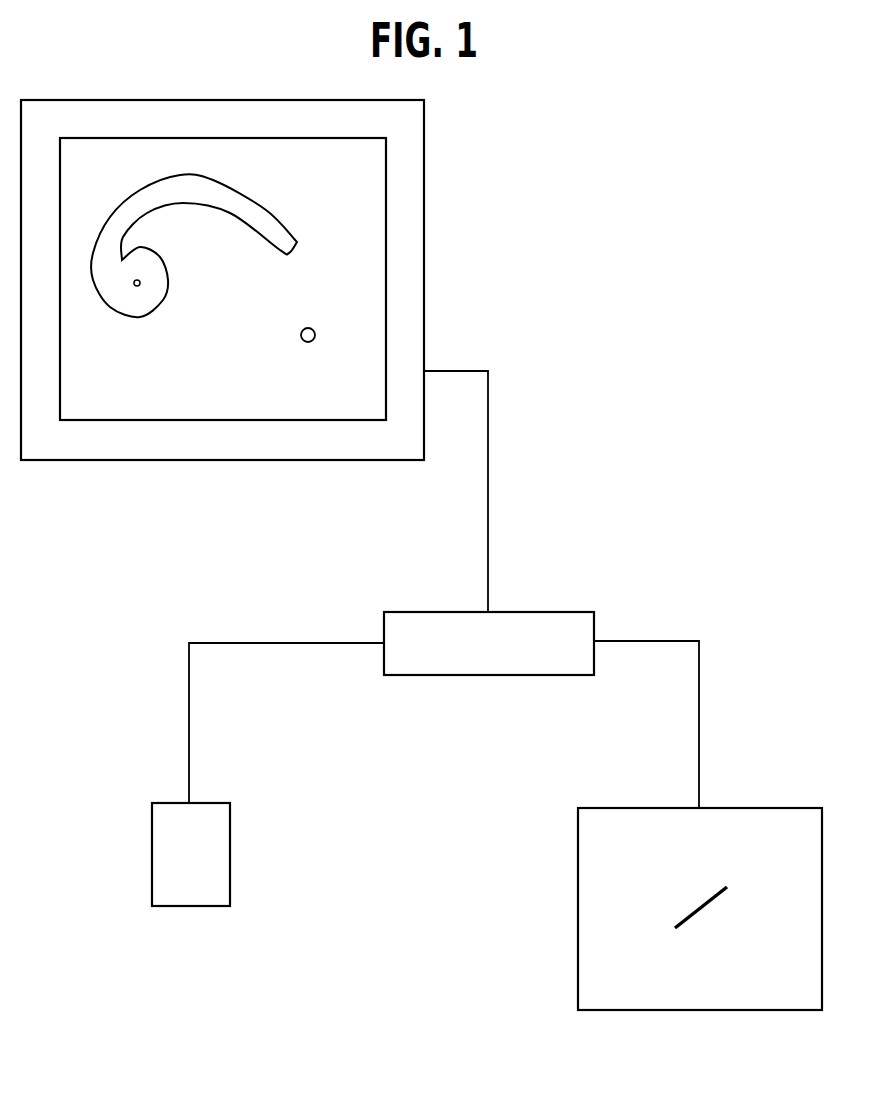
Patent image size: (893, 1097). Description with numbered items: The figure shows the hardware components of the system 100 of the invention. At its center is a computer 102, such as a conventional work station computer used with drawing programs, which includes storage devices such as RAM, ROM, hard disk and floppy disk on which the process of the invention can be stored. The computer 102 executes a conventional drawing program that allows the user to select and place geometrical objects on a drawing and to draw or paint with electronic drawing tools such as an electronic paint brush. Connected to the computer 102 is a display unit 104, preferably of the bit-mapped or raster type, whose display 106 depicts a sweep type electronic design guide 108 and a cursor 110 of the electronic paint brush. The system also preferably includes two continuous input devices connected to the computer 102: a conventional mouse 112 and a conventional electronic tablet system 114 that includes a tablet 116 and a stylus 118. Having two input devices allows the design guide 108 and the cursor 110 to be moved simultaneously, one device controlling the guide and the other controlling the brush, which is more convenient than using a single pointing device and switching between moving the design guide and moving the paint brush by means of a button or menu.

The system 100 is at (744, 442).
The computer 102 is at (590, 612).
The display unit 104 is at (425, 175).
The display 106 is at (105, 139).
The sweep type electronic design guide 108 is at (265, 210).
The cursor 110 is at (300, 327).
The mouse 112 is at (213, 803).
The electronic tablet system 114 is at (480, 881).
The tablet 116 is at (787, 808).
The stylus 118 is at (700, 908).